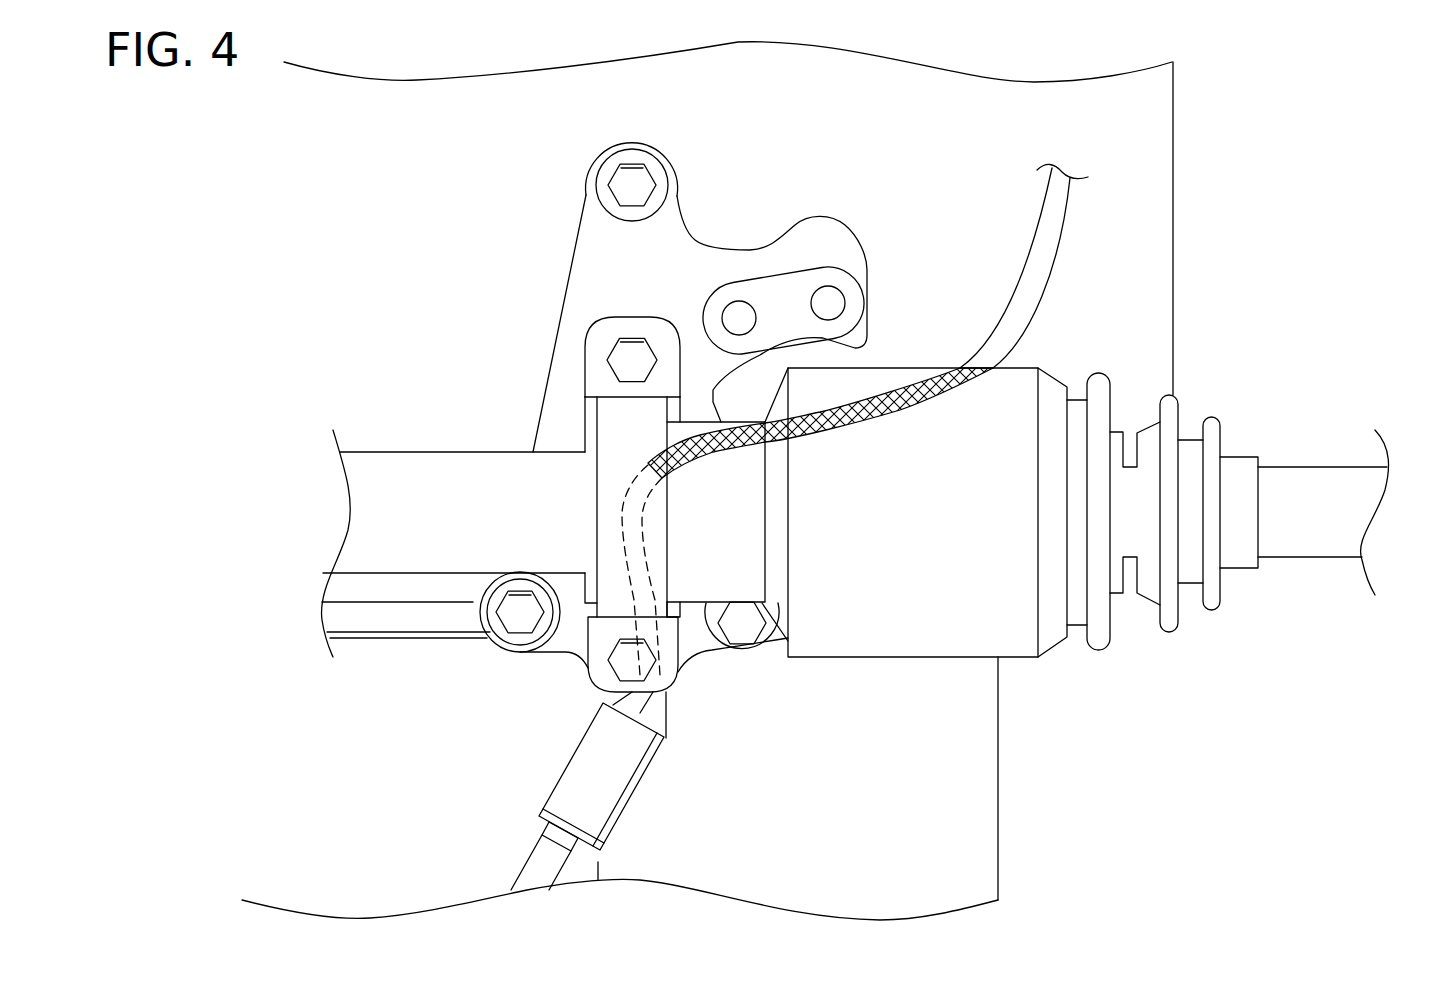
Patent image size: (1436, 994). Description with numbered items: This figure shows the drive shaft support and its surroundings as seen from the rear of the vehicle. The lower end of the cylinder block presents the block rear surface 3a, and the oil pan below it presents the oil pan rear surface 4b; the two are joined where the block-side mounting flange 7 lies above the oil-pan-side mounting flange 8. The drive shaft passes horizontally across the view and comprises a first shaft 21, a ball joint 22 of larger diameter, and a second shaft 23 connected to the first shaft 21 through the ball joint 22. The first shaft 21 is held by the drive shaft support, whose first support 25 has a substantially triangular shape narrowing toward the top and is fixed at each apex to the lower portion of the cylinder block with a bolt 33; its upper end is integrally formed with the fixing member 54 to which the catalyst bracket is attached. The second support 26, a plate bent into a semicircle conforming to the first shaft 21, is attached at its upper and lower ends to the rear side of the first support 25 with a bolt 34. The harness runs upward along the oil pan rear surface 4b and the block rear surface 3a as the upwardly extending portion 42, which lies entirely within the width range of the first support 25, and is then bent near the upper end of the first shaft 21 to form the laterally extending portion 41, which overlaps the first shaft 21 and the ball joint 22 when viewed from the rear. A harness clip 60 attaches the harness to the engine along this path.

The block rear surface 3a is at (1160, 208).
The oil pan rear surface 4b is at (983, 780).
The block-side mounting flange 7 is at (422, 607).
The oil-pan-side mounting flange 8 is at (400, 638).
The first shaft 21 is at (388, 462).
The ball joint 22 is at (1023, 380).
The second shaft 23 is at (1297, 475).
The first support 25 is at (597, 238).
The second support 26 is at (598, 338).
The bolt 33 is at (640, 197).
The bolt 34 is at (618, 668).
The laterally extending portion 41 is at (885, 425).
The upwardly extending portion 42 is at (640, 523).
The fixing member 54 is at (842, 233).
The harness clip 60 is at (630, 783).